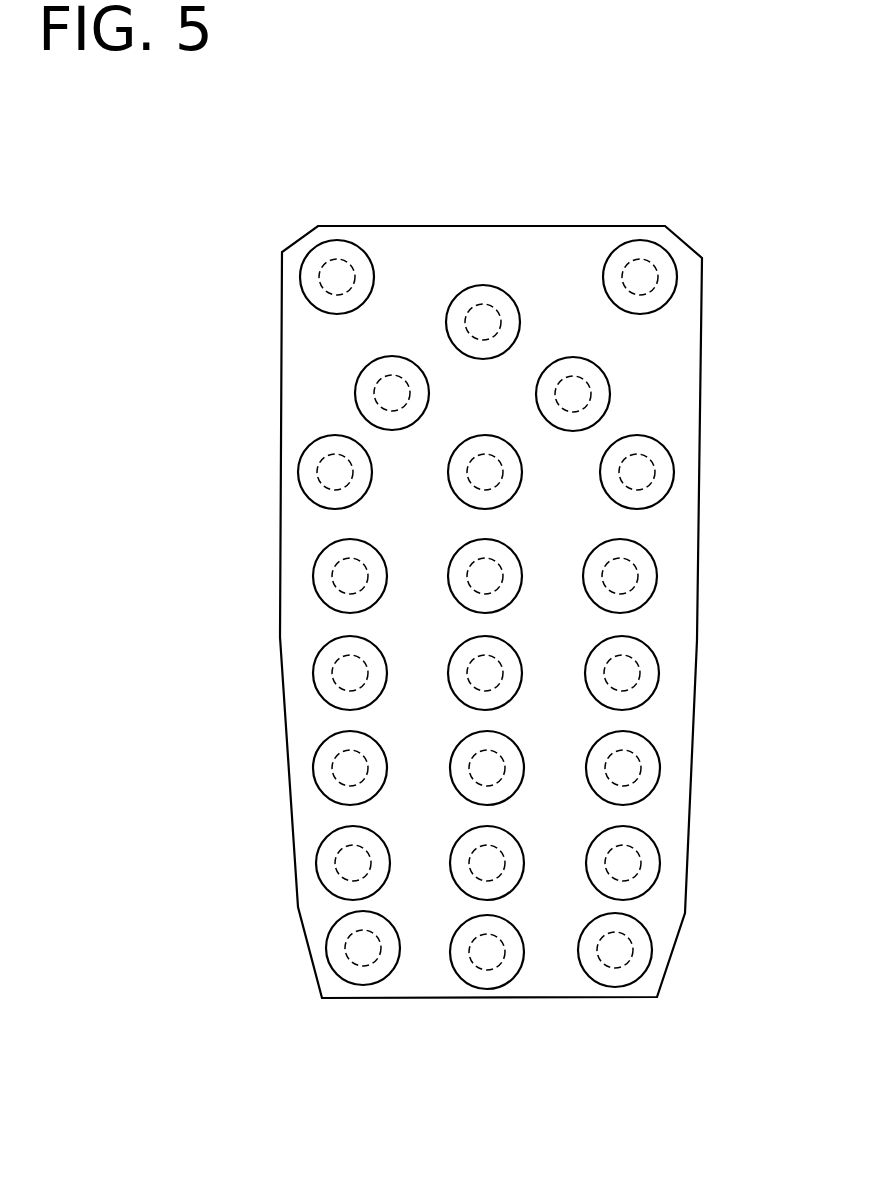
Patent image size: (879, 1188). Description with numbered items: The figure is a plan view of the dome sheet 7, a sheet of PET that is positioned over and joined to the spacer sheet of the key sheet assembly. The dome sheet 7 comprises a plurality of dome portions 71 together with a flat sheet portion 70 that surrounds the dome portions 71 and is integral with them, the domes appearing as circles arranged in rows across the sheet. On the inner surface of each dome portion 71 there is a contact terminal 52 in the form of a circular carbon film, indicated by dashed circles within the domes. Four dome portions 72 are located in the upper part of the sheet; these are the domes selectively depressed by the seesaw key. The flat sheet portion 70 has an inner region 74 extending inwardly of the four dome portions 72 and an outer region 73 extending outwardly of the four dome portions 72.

The dome sheet 7 is at (598, 226).
The flat sheet portion 70 is at (673, 348).
The dome portions 71 is at (650, 590).
The four dome portions 72 is at (483, 285).
The outer region 73 is at (405, 507).
The inner region 74 is at (453, 403).
The contact terminal 52 is at (653, 273).